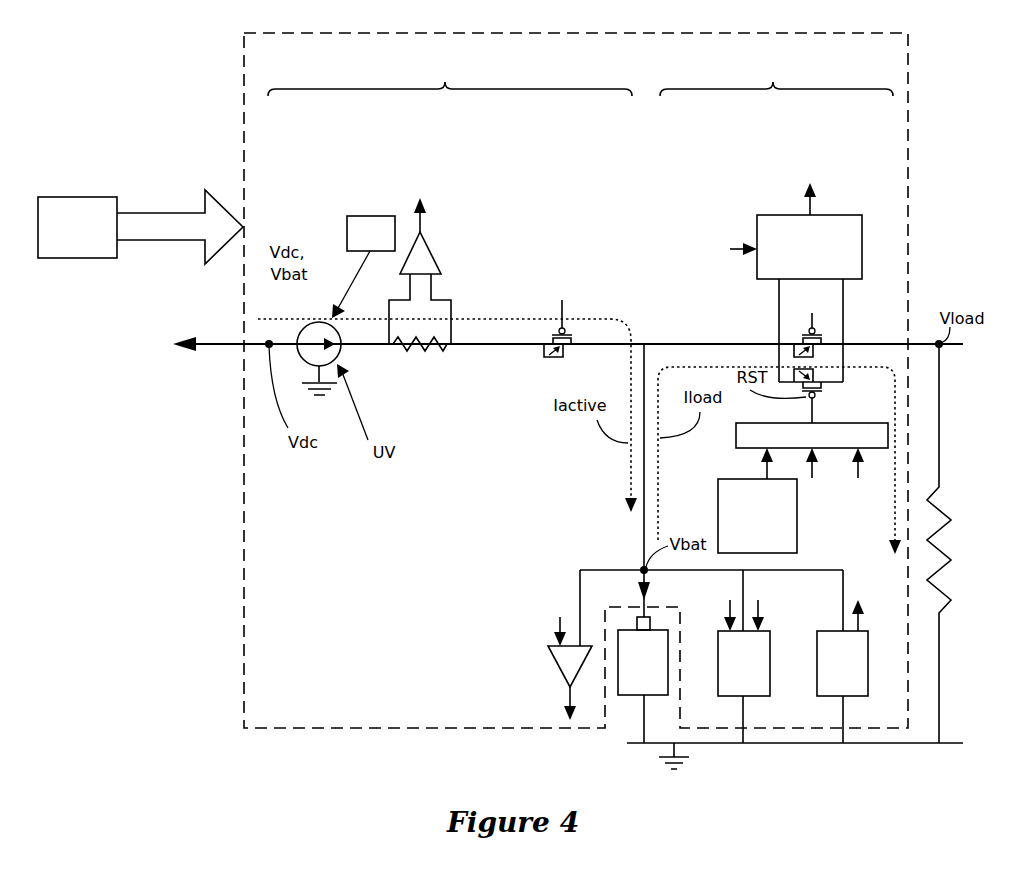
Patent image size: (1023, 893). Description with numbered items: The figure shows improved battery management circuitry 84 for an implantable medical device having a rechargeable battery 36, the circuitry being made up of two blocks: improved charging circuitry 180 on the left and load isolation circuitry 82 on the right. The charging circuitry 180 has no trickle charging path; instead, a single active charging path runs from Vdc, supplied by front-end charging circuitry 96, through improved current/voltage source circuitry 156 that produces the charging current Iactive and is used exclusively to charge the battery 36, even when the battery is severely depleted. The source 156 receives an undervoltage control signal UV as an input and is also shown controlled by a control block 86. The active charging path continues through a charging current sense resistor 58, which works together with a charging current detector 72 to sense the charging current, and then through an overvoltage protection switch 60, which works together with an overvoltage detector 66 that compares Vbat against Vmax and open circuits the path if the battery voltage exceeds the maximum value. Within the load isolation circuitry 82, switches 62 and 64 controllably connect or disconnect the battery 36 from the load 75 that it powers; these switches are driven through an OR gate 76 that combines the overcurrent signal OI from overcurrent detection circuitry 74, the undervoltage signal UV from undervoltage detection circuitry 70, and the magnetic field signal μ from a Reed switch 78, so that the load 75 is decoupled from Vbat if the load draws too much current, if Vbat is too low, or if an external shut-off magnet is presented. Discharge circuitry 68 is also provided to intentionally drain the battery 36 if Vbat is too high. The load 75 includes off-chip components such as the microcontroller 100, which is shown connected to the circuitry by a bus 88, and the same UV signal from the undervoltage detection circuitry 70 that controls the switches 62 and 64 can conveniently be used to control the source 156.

The battery 36 is at (652, 656).
The charging current sense resistor 58 is at (420, 327).
The overvoltage protection switch 60 is at (560, 335).
The switch 62 is at (825, 342).
The switch 64 is at (821, 397).
The overvoltage detector 66 is at (565, 663).
The discharge circuitry 68 is at (743, 656).
The undervoltage detection circuitry 70 is at (853, 656).
The charging current detector 72 is at (426, 253).
The overcurrent detection circuitry 74 is at (774, 231).
The load 75 is at (965, 543).
The OR gate 76 is at (812, 461).
The Reed switch 78 is at (757, 516).
The load isolation circuitry 82 is at (776, 77).
The battery management circuitry 84 is at (243, 178).
The current source control block 86 is at (363, 267).
The bus 88 is at (180, 227).
The front-end charging circuitry 96 is at (568, 338).
The microcontroller 100 is at (77, 227).
The current/voltage source circuitry 156 is at (334, 356).
The charging circuitry 180 is at (450, 77).